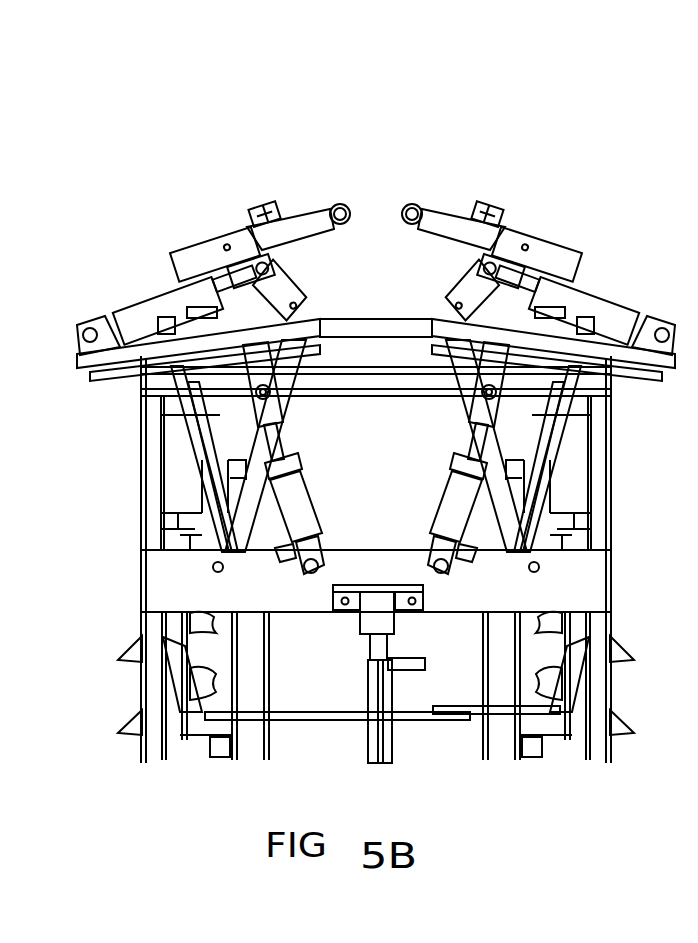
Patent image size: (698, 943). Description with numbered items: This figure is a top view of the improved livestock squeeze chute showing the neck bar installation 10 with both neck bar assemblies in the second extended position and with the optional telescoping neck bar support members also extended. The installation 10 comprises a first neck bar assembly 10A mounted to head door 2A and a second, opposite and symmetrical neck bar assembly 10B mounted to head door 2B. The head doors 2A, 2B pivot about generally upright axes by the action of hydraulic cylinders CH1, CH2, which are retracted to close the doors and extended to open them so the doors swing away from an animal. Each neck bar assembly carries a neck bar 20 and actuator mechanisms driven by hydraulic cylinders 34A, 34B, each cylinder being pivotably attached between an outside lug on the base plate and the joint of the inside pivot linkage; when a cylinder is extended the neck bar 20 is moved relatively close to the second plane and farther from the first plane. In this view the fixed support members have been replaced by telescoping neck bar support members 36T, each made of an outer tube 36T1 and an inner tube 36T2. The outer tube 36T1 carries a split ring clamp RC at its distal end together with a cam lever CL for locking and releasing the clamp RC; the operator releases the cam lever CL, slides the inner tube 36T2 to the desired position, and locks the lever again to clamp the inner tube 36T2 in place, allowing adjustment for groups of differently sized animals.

The neck bar installation 10 is at (312, 94).
The first neck bar assembly 10A is at (191, 166).
The second neck bar assembly 10B is at (580, 142).
The telescoping neck bar support member 36T is at (177, 230).
The outer tube 36T1 is at (218, 232).
The inner tube 36T2 is at (310, 217).
The split ring clamp RC is at (291, 205).
The cam lever CL is at (251, 215).
The neck bar 20 is at (346, 222).
The hydraulic cylinder 34A is at (147, 308).
The hydraulic cylinder 34B is at (587, 303).
The head door 2A is at (93, 380).
The head door 2B is at (660, 376).
The hydraulic cylinder CH1 is at (292, 498).
The hydraulic cylinder CH2 is at (460, 490).